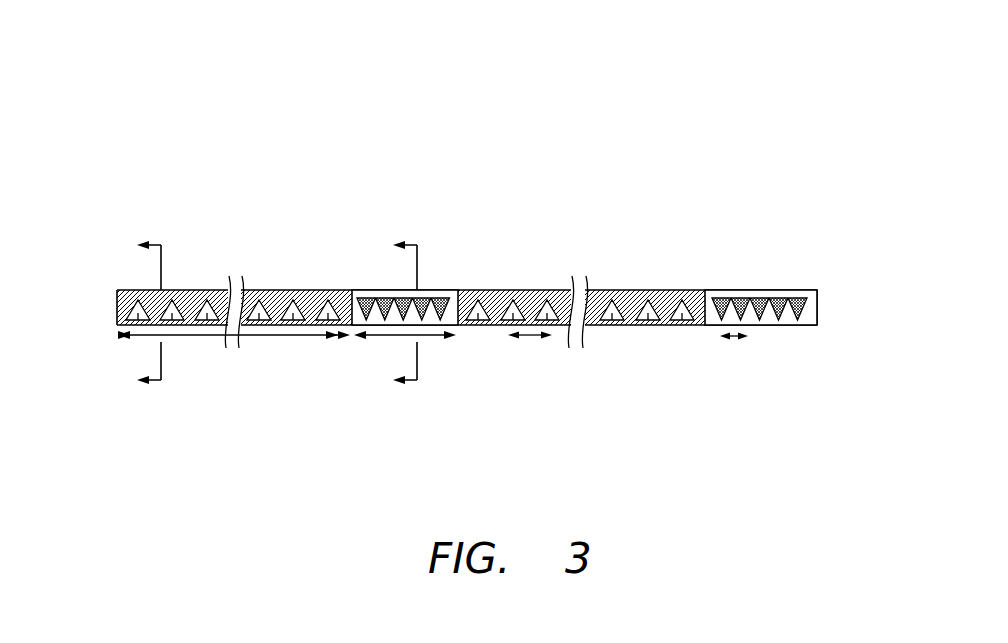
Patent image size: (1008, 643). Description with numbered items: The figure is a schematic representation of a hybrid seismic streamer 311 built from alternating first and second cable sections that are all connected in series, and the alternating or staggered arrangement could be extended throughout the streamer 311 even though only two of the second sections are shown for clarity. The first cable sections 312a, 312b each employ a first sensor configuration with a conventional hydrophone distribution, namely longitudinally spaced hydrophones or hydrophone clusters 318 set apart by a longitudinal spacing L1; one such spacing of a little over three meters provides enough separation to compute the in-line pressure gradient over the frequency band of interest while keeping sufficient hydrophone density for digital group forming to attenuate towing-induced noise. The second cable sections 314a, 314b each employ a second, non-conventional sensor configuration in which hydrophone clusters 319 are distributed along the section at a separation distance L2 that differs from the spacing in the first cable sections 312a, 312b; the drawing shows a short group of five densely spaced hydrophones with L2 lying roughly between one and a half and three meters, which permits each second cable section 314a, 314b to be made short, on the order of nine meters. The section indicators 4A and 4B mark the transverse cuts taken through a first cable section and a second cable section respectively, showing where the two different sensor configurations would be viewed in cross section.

The hybrid seismic streamer 311 is at (677, 66).
The first cable section 312a is at (290, 290).
The first cable section 312b is at (631, 290).
The second cable section 314a is at (433, 291).
The second cable section 314b is at (759, 291).
The hydrophone clusters 318 is at (330, 325).
The hydrophone clusters 319 is at (718, 292).
The longitudinal spacing L1 is at (530, 336).
The separation distance L2 is at (737, 336).
The section line 4A- 4A is at (132, 311).
The section line 4B- 4B is at (387, 311).